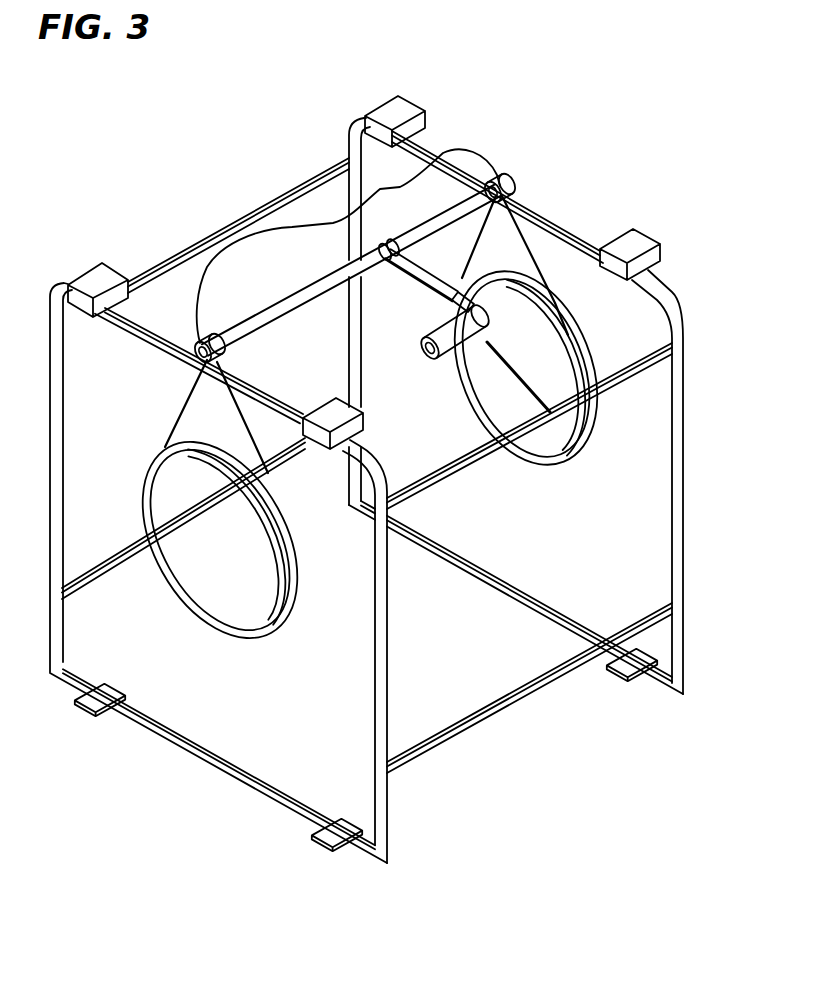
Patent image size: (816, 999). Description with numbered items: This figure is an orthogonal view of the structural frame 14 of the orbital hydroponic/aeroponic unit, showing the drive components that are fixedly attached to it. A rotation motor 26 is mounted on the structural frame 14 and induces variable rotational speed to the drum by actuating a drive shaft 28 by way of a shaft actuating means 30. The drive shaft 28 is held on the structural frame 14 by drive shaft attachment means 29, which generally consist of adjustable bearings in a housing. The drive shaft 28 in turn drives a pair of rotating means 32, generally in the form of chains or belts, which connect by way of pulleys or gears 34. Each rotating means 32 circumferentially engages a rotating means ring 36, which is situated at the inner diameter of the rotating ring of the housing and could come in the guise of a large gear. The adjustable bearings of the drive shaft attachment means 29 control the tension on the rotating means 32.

The structural frame 14 is at (685, 443).
The rotation motor 26 is at (478, 326).
The drive shaft 28 is at (327, 286).
The drive shaft attachment means 29 is at (222, 345).
The shaft actuating means 30 is at (431, 284).
The rotating means 32 is at (178, 408).
The pulleys or gears 34 is at (410, 222).
The rotating means ring 36 is at (145, 462).